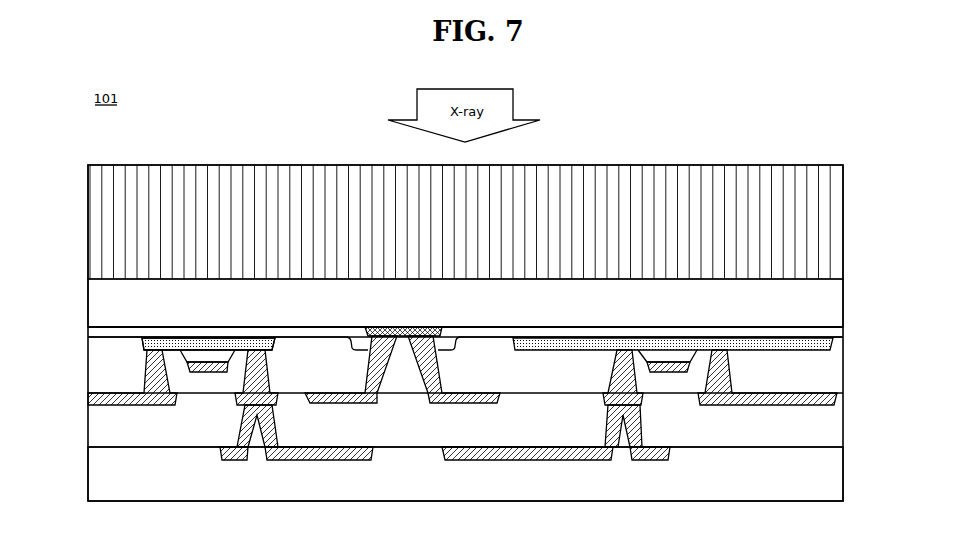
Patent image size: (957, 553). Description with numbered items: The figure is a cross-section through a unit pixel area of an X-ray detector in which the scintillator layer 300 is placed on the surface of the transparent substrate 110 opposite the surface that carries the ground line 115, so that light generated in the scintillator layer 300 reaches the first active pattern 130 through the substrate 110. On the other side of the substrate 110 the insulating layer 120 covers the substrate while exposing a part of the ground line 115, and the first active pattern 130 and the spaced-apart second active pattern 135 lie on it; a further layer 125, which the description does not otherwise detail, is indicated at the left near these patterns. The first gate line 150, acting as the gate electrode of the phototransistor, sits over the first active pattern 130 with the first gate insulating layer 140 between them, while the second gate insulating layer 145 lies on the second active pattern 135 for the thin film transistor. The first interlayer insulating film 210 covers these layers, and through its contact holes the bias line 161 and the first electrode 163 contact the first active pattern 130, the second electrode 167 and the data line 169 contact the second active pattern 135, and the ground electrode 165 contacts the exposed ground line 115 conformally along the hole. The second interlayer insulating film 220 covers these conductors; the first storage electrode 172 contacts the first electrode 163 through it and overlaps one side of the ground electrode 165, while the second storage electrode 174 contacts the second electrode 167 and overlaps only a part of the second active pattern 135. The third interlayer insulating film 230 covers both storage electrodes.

The scintillator layer 300 is at (835, 225).
The substrate 110 is at (835, 300).
The insulating layer 120 is at (833, 332).
The first active pattern 130 is at (832, 343).
The semiconductor layer 125 is at (142, 337).
The second active pattern 135 is at (143, 350).
The second gate insulating layer 145 is at (183, 362).
The first gate insulating layer 140 is at (685, 353).
The first gate line 150 is at (690, 370).
The first interlayer insulating film 210 is at (93, 382).
The data line 169 is at (90, 397).
The second electrode 167 is at (235, 405).
The second storage electrode 174 is at (283, 460).
The ground line 115 is at (393, 350).
The ground electrode 165 is at (455, 403).
The first electrode 163 is at (645, 405).
The first storage electrode 172 is at (645, 460).
The bias line 161 is at (832, 403).
The second interlayer insulating film 220 is at (93, 429).
The third interlayer insulating film 230 is at (93, 473).